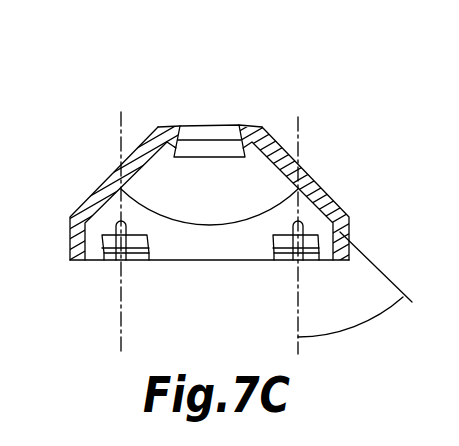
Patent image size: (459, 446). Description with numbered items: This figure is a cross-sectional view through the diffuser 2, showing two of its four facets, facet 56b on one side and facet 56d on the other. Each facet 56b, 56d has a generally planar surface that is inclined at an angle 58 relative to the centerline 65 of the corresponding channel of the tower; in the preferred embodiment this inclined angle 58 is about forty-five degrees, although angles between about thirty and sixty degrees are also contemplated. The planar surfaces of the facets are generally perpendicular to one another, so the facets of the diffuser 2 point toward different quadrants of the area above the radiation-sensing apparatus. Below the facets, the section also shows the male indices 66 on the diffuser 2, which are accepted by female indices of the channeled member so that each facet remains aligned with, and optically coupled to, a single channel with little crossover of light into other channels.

The diffuser 2 is at (292, 98).
The facet 56b is at (119, 190).
The facet 56d is at (303, 168).
The inclined angle 58 is at (353, 327).
The centerline 65 is at (122, 341).
The male indices 66 is at (116, 262).